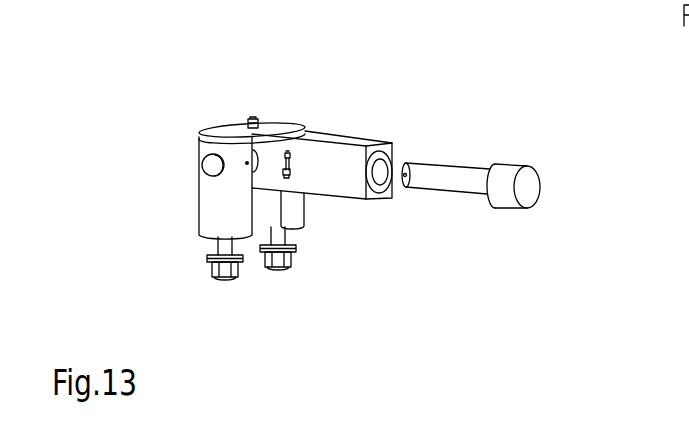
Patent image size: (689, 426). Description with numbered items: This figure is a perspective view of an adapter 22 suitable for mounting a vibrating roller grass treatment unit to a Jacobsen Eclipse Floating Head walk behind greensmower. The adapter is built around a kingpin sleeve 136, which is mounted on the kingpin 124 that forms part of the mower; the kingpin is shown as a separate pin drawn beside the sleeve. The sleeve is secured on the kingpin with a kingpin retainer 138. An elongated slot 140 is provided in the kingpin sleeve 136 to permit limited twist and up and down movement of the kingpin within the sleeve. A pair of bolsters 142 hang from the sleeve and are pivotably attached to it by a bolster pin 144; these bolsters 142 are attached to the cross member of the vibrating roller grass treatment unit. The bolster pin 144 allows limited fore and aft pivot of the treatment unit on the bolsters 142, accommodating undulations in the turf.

The adapter 22 is at (330, 86).
The kingpin 124 is at (436, 175).
The kingpin sleeve 136 is at (333, 141).
The kingpin retainer 138 is at (287, 172).
The elongated slot 140 is at (289, 159).
The bolsters 142 is at (215, 210).
The bolster pin 144 is at (203, 163).